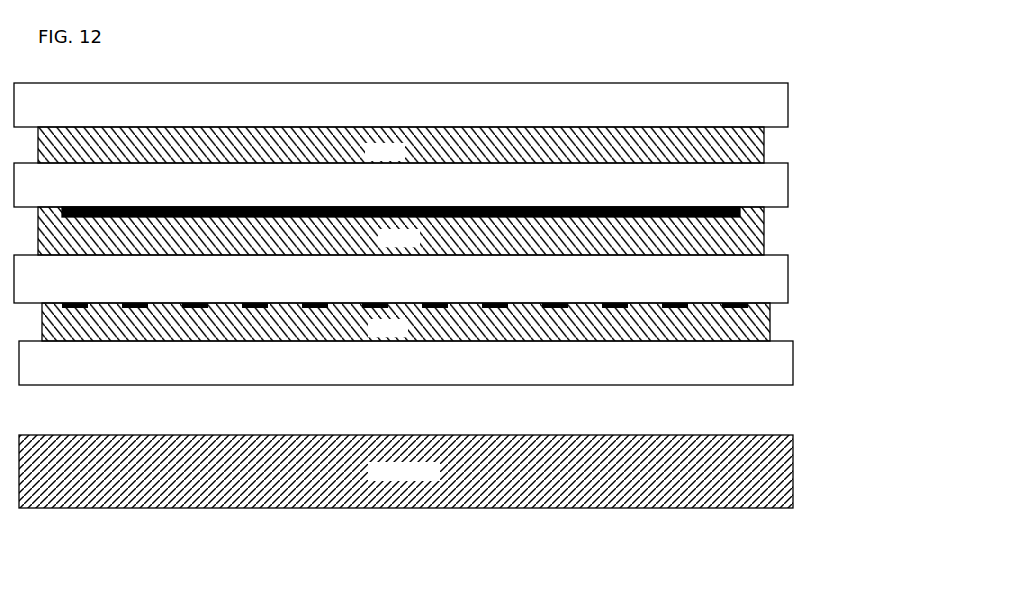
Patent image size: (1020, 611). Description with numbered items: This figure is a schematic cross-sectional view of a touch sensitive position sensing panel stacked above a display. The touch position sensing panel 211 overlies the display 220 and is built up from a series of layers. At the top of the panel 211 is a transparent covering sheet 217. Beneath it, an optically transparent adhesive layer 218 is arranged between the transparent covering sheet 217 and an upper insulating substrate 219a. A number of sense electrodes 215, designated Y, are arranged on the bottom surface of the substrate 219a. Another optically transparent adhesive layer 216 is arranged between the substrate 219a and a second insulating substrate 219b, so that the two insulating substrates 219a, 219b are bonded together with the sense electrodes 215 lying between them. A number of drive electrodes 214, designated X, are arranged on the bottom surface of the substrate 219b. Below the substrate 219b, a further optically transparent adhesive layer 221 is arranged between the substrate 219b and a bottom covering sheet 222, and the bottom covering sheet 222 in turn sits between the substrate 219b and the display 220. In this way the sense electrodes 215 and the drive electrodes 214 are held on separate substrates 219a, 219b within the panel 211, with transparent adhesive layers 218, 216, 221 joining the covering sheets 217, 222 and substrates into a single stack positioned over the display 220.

The touch position sensing panel 211 is at (650, 60).
The transparent covering sheet 217 is at (401, 105).
The optically transparent adhesive layer 218 is at (401, 145).
The insulating substrate 219a is at (401, 185).
The sense electrodes 215 is at (762, 212).
The optically transparent adhesive layer 216 is at (401, 231).
The insulating substrate 219b is at (401, 279).
The drive electrodes 214 is at (760, 307).
The optically transparent adhesive layer 221 is at (406, 322).
The bottom covering sheet 222 is at (406, 363).
The display 220 is at (457, 508).